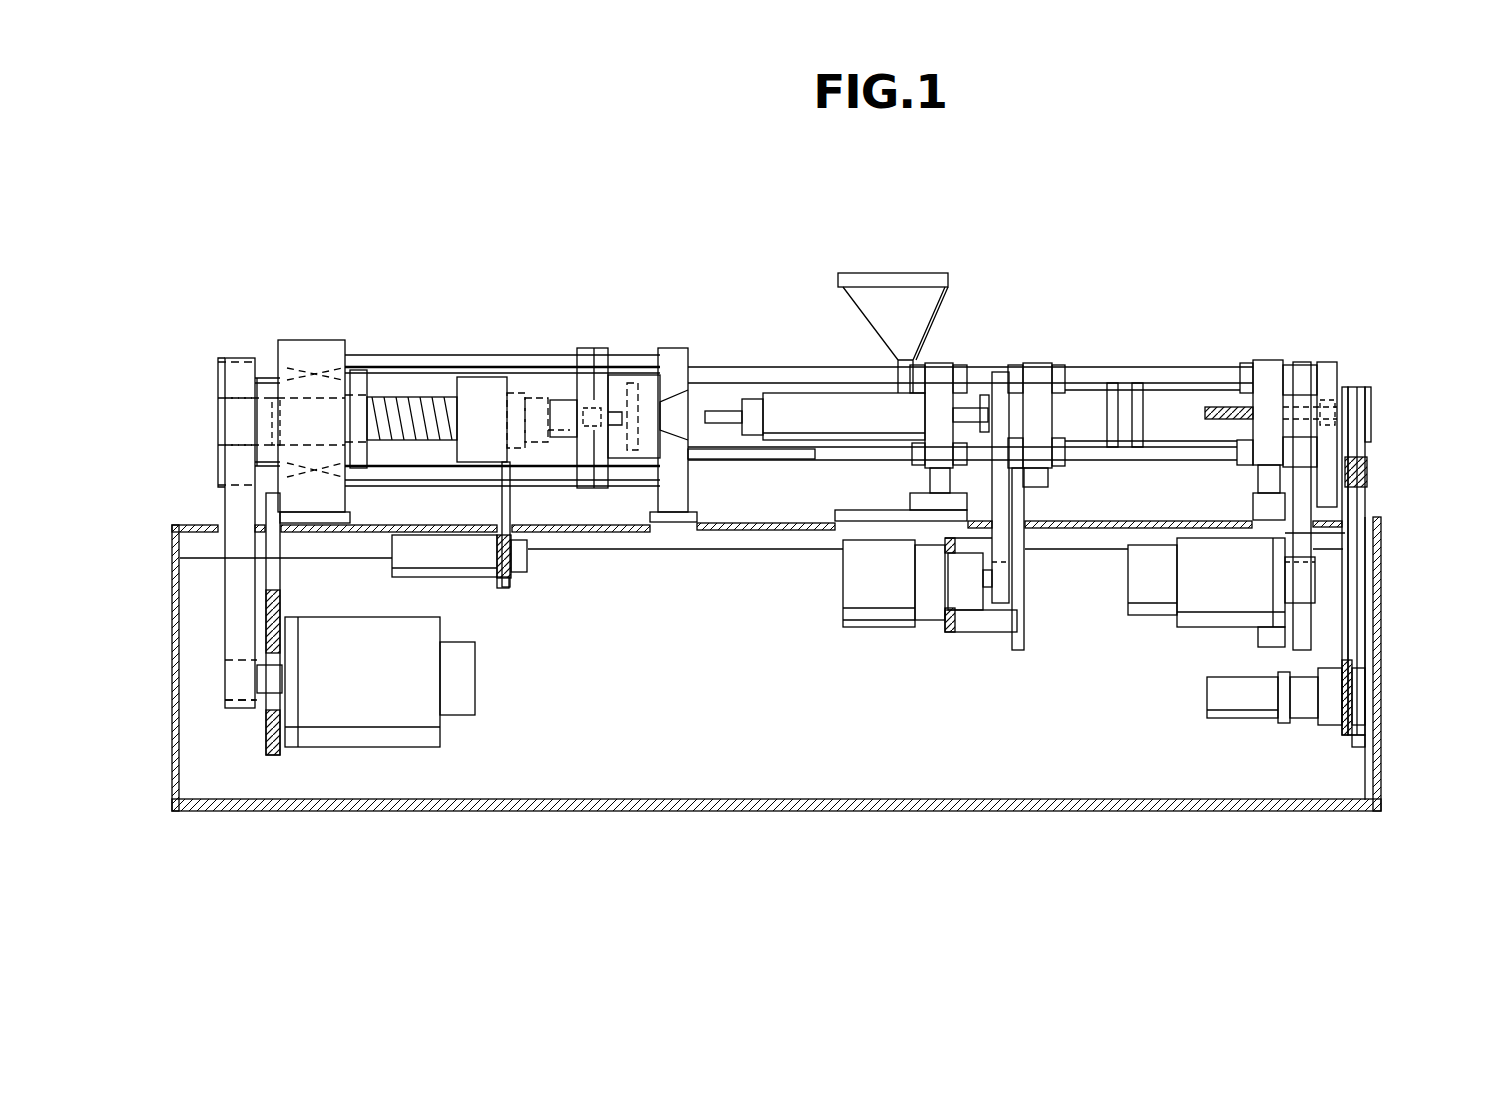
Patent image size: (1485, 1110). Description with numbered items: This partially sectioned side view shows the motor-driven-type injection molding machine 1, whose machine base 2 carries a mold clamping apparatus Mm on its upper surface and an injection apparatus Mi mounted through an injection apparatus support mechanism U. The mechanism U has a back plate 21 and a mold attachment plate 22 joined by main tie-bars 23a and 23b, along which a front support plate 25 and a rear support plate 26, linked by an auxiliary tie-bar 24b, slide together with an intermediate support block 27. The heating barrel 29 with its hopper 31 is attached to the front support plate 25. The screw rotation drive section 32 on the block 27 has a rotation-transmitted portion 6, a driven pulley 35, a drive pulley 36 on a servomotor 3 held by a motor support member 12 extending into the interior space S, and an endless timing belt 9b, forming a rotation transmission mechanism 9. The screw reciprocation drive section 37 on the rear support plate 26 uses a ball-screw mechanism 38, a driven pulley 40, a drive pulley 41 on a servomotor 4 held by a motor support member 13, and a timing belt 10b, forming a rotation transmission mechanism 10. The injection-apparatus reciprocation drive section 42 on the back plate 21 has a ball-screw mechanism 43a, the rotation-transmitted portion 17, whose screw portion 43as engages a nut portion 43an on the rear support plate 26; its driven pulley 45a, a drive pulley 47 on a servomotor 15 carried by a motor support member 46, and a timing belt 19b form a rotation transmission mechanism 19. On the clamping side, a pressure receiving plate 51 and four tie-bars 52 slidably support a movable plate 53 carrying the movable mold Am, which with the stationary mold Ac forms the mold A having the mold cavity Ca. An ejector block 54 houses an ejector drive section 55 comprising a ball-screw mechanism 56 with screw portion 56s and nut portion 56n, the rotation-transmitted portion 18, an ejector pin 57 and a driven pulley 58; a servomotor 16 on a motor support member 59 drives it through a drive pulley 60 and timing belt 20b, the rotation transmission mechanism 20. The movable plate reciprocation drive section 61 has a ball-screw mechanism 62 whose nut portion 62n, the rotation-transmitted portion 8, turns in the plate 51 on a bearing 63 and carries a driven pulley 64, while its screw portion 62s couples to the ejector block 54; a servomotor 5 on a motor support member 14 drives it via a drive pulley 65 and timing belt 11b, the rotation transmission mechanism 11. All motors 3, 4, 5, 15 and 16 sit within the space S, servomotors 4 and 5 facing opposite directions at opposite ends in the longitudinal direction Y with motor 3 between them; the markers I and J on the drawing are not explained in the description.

The motor-driven-type injection molding machine 1 is at (1095, 217).
The machine base 2 is at (183, 523).
The servomotor for screw rotation 3 is at (880, 630).
The servomotor for screw reciprocation 4 is at (1133, 811).
The servomotor for mold clamping 5 is at (395, 748).
The rotation-transmitted portion 6 is at (983, 395).
The rotation-transmitted portion 8 is at (262, 358).
The rotation transmission mechanism 9 is at (990, 617).
The endless timing belt 9b is at (1035, 600).
The rotation transmission mechanism 10 is at (1322, 608).
The endless timing belt 10b is at (1314, 535).
The rotation transmission mechanism 11 is at (215, 482).
The endless timing belt 11b is at (225, 623).
The motor support member 12 is at (1020, 655).
The motor support member 13 is at (1268, 650).
The motor support member 14 is at (275, 811).
The servomotor for injection apparatus reciprocation 15 is at (1303, 811).
The servomotor for ejection 16 is at (470, 580).
The rotation-transmitted portion 17 is at (1352, 387).
The rotation-transmitted portion 18 is at (542, 398).
The rotation transmission mechanism 19 is at (1372, 490).
The endless timing belt 19b is at (1360, 660).
The rotation transmission mechanism 20 is at (520, 572).
The endless timing belt 20b is at (525, 562).
The back plate 21 is at (1332, 362).
The mold attachment plate 22 is at (688, 357).
The main tie-bar 23a is at (770, 366).
The main tie-bar 23b is at (757, 470).
The auxiliary tie-bar 24b is at (1035, 533).
The front support plate 25 is at (937, 363).
The rear support plate 26 is at (1262, 360).
The intermediate support block 27 is at (1037, 363).
The heating barrel 29 is at (820, 393).
The hopper 31 is at (867, 273).
The screw rotation drive section 32 is at (865, 630).
The driven pulley 35 is at (1015, 412).
The drive pulley 36 is at (985, 612).
The screw reciprocation drive section 37 is at (1208, 645).
The ball-screw mechanism 38 is at (1152, 390).
The driven pulley 40 is at (1325, 362).
The drive pulley 41 is at (1315, 590).
The injection-apparatus reciprocation drive section 42 is at (1228, 735).
The ball-screw mechanism 43a is at (1216, 402).
The screw portion 43as is at (1207, 413).
The nut portion 43an is at (1253, 425).
The driven pulley 45a is at (1370, 405).
The motor support member 46 is at (1375, 745).
The drive pulley 47 is at (1365, 710).
The pressure receiving plate 51 is at (337, 345).
The tie-bars 52 is at (645, 357).
The movable plate 53 is at (592, 348).
The ejector block 54 is at (465, 378).
The ejector drive section 55 is at (515, 395).
The ball-screw mechanism 56 is at (561, 447).
The nut portion 56n is at (506, 389).
The screw portion 56s is at (560, 400).
The ejector pin 57 is at (600, 250).
The driven pulley 58 is at (502, 418).
The motor support member 59 is at (505, 590).
The drive pulley 60 is at (528, 580).
The movable plate reciprocation drive section 61 is at (207, 318).
The ball-screw mechanism 62 is at (372, 405).
The nut portion 62n is at (268, 360).
The screw portion 62s is at (418, 398).
The bearing 63 is at (287, 360).
The driven pulley 64 is at (220, 382).
The drive pulley 65 is at (227, 692).
The mold A is at (652, 362).
The movable mold Am is at (627, 462).
The stationary mold Ac is at (690, 470).
The mold cavity Ca is at (625, 374).
The mold clamping apparatus Mm is at (435, 248).
The injection apparatus Mi is at (1183, 237).
The interior space S is at (752, 732).
The injection apparatus support mechanism U is at (1099, 366).
The section line I is at (195, 800).
The section line J is at (1370, 800).
The longitudinal direction Y is at (835, 903).